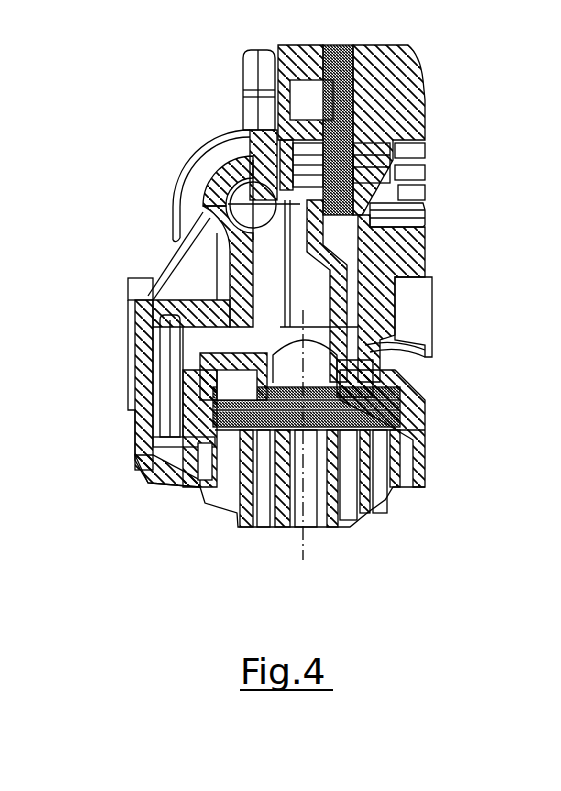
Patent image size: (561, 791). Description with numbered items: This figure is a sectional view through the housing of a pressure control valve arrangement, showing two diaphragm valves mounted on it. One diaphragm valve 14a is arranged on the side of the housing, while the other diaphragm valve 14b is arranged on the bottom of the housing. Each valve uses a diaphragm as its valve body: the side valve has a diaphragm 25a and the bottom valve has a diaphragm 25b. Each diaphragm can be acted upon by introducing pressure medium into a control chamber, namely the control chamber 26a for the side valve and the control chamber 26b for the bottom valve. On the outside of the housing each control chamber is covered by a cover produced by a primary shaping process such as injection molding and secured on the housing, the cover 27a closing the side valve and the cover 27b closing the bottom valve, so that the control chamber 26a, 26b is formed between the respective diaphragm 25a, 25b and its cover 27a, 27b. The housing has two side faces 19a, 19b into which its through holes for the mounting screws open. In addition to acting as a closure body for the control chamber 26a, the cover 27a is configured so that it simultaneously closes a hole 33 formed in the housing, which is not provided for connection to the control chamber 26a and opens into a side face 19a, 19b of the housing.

The cover 27a is at (420, 75).
The diaphragm 25a is at (423, 138).
The control chamber 26a is at (427, 212).
The diaphragm valve 14a is at (437, 253).
The hole 33 is at (340, 348).
The side face 19a is at (435, 382).
The side face 19b is at (125, 402).
The cover 27b is at (138, 465).
The diaphragm valve 14b is at (203, 503).
The control chamber 26b is at (230, 500).
The diaphragm 25b is at (383, 470).